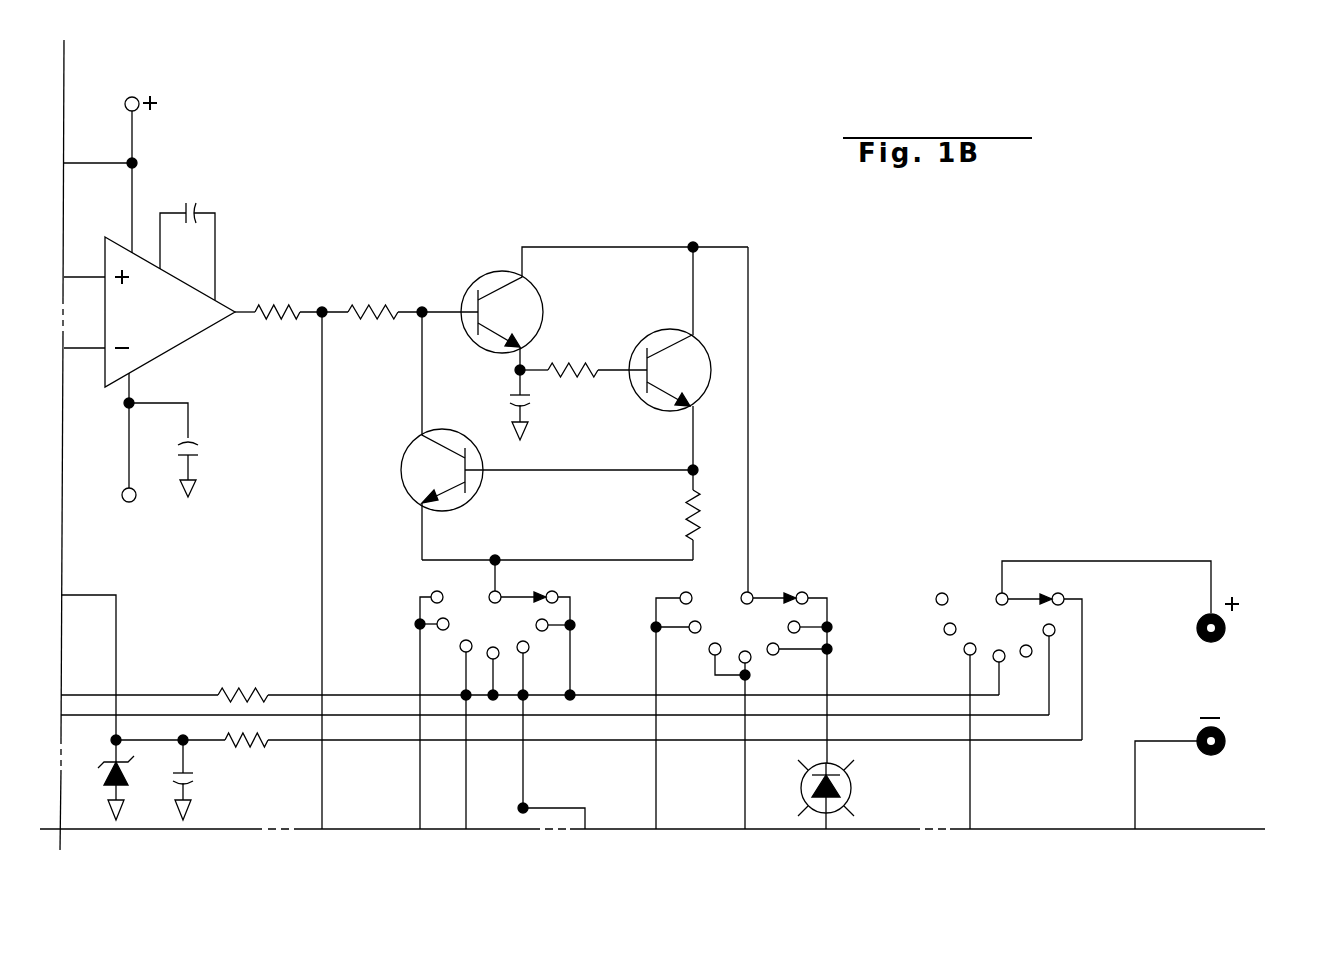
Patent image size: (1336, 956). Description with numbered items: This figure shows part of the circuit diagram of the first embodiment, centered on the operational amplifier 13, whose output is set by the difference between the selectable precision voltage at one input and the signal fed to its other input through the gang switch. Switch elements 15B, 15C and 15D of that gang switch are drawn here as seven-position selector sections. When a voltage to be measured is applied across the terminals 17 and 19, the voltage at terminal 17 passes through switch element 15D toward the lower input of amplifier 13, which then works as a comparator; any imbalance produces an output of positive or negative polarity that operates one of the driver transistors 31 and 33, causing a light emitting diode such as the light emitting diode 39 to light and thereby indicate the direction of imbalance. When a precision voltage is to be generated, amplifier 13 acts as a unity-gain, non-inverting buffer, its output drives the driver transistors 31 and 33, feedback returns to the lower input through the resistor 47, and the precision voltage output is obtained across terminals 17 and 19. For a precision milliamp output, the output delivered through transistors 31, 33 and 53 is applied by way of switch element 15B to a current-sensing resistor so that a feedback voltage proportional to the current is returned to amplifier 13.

The operational amplifier 13 is at (183, 345).
The driver transistor 31 is at (540, 300).
The driver transistor 33 is at (640, 342).
The transistor 53 is at (475, 497).
The switch element 15B is at (473, 597).
The switch element 15C is at (735, 601).
The switch element 15D is at (975, 592).
The resistor 47 is at (243, 690).
The light emitting diode 39 is at (852, 780).
The terminal 17 is at (1226, 630).
The terminal 19 is at (1226, 741).